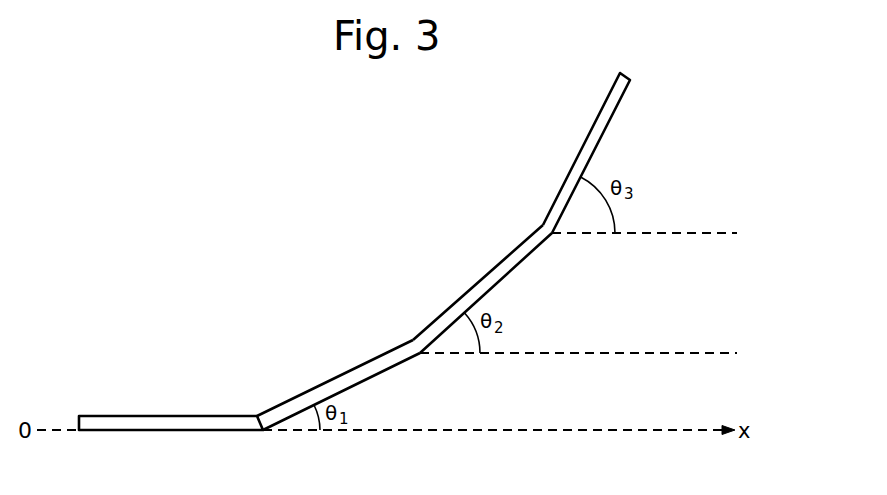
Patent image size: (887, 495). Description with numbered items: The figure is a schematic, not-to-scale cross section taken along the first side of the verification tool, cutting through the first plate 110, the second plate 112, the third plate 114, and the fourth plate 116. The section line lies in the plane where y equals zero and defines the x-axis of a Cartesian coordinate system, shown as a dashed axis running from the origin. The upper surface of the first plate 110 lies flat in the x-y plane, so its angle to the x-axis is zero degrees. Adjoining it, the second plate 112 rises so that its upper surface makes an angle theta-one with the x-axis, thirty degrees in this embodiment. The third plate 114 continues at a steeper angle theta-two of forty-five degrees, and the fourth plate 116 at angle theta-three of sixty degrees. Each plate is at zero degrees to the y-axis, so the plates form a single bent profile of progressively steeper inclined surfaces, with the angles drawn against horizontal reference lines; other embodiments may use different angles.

The first plate 110 is at (155, 416).
The second plate 112 is at (331, 380).
The third plate 114 is at (478, 282).
The fourth plate 116 is at (583, 145).